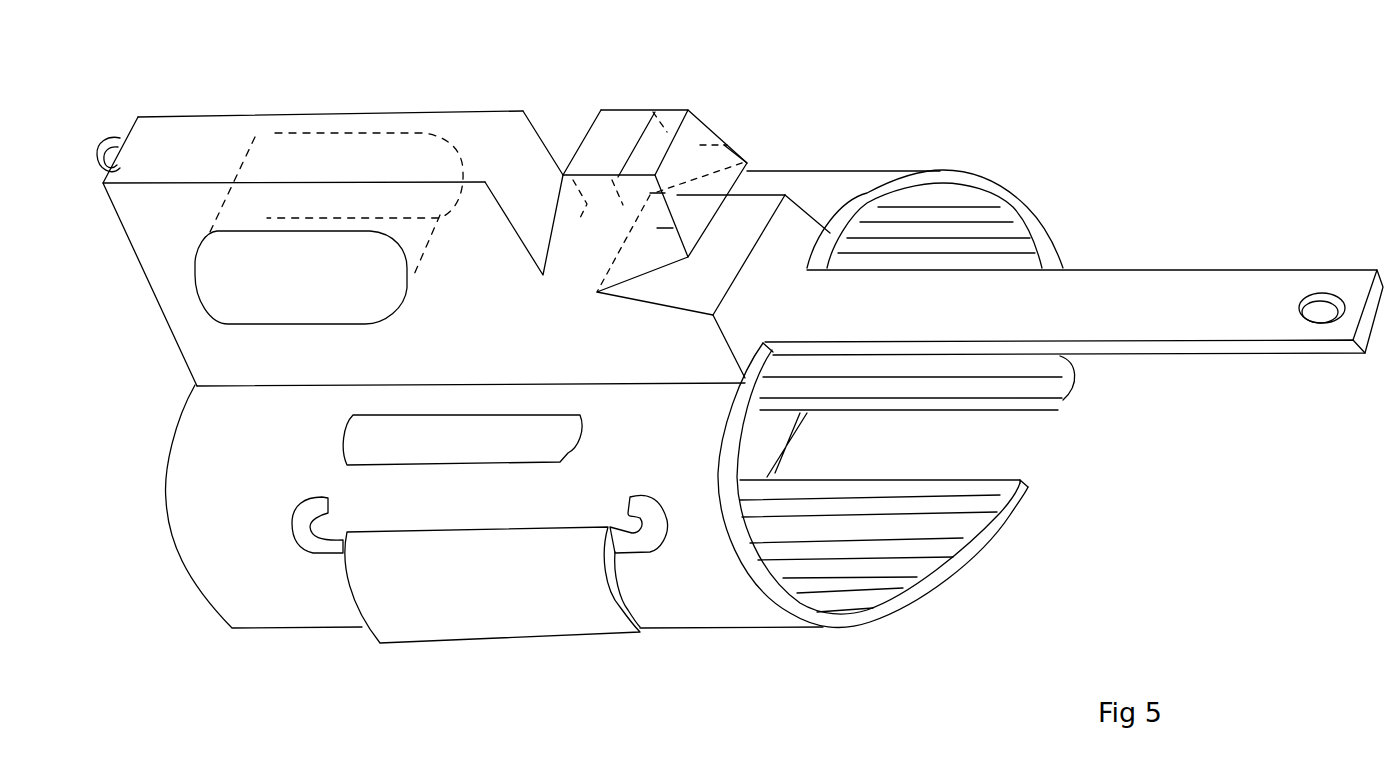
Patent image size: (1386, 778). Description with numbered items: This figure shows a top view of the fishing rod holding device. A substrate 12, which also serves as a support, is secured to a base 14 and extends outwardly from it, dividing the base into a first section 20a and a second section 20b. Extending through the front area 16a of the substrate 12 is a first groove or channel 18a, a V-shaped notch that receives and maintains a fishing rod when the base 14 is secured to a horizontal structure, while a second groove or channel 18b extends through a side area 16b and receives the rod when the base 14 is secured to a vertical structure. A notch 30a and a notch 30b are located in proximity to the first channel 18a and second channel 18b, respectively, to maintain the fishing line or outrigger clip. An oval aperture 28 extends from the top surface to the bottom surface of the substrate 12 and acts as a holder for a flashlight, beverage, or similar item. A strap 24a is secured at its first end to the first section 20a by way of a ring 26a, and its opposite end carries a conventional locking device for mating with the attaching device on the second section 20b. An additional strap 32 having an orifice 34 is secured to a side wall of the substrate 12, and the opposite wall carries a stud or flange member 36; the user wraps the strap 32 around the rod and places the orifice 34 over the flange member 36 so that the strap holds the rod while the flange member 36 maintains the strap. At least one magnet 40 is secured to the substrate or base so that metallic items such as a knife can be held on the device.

The substrate 12 is at (197, 127).
The base 14 is at (157, 470).
The front area 16a is at (148, 235).
The side area 16b is at (800, 235).
The first groove or channel 18a is at (535, 153).
The second groove or channel 18b is at (750, 213).
The first section 20a is at (1033, 508).
The second section 20b is at (1085, 390).
The strap 24a is at (487, 628).
The ring 26a is at (647, 537).
The aperture 28 is at (227, 290).
The notch 30a is at (637, 132).
The notch 30b is at (740, 145).
The additional strap 32 is at (1167, 277).
The orifice 34 is at (1318, 313).
The stud or flange member 36 is at (113, 127).
The magnet 40 is at (365, 437).